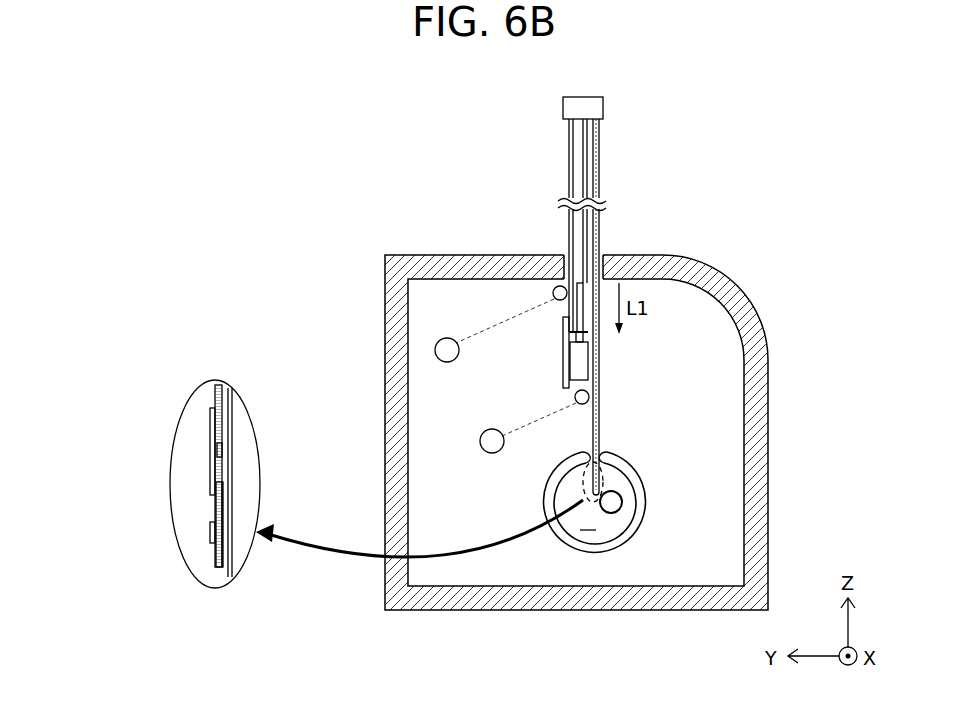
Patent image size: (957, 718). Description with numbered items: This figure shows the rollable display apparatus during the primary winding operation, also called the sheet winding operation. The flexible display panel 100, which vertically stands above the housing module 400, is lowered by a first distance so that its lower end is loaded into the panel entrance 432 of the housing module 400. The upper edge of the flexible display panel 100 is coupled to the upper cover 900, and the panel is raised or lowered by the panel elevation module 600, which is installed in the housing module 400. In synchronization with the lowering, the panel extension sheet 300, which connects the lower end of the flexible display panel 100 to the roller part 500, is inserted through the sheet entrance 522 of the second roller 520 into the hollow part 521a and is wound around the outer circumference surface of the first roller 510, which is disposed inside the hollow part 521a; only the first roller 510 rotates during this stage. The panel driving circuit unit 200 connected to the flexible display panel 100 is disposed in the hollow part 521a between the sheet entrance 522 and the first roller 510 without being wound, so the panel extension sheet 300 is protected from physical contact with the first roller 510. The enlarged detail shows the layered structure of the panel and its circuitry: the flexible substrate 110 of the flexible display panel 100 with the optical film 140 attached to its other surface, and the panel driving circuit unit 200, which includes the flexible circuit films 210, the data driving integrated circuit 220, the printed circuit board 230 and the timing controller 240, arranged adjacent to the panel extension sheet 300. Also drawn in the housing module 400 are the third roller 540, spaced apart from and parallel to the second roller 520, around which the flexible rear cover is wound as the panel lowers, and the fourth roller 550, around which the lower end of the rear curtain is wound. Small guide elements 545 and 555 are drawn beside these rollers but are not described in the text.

The flexible display panel 100 is at (608, 187).
The flexible substrate 110 is at (215, 423).
The optical film 140 is at (232, 398).
The panel driving circuit unit 200 is at (137, 497).
The flexible circuit films 210 is at (212, 478).
The data driving integrated circuit 220 is at (218, 452).
The printed circuit board 230 is at (220, 507).
The timing controller 240 is at (213, 533).
The panel extension sheet 300 is at (222, 572).
The housing module 400 is at (757, 500).
The panel entrance 432 is at (600, 262).
The roller part 500 is at (540, 572).
The first roller 510 is at (610, 506).
The second roller 520 is at (598, 550).
The hollow part 521a is at (588, 531).
The sheet entrance 522 is at (598, 458).
The third roller 540 is at (480, 441).
The guide pin 545 is at (575, 398).
The fourth roller 550 is at (440, 350).
The guide pin 555 is at (553, 294).
The panel elevation module 600 is at (577, 144).
The upper cover 900 is at (563, 110).